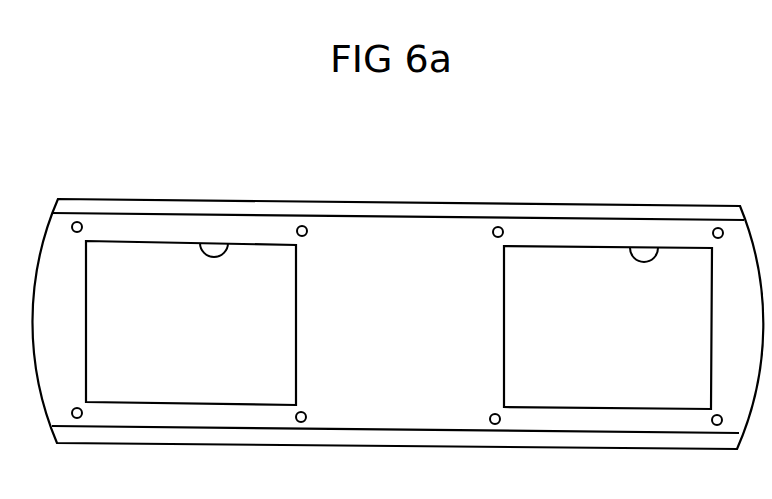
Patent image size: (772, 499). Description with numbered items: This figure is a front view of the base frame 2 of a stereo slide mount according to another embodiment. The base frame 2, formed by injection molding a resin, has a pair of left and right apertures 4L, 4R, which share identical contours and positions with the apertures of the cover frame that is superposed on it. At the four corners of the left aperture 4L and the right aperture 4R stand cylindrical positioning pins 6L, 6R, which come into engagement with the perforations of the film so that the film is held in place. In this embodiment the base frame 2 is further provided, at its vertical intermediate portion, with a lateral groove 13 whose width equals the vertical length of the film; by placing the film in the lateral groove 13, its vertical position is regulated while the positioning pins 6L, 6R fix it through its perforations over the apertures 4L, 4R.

The base frame 2 is at (392, 197).
The left aperture 4L is at (200, 243).
The right aperture 4R is at (630, 248).
The left positioning pins 6L is at (82, 223).
The right positioning pins 6R is at (498, 227).
The lateral groove 13 is at (267, 230).